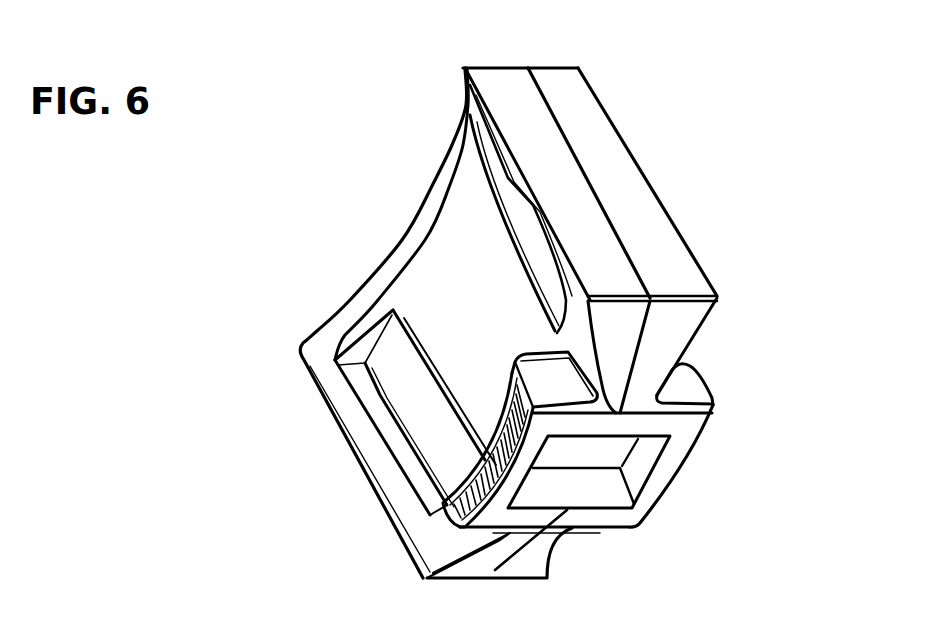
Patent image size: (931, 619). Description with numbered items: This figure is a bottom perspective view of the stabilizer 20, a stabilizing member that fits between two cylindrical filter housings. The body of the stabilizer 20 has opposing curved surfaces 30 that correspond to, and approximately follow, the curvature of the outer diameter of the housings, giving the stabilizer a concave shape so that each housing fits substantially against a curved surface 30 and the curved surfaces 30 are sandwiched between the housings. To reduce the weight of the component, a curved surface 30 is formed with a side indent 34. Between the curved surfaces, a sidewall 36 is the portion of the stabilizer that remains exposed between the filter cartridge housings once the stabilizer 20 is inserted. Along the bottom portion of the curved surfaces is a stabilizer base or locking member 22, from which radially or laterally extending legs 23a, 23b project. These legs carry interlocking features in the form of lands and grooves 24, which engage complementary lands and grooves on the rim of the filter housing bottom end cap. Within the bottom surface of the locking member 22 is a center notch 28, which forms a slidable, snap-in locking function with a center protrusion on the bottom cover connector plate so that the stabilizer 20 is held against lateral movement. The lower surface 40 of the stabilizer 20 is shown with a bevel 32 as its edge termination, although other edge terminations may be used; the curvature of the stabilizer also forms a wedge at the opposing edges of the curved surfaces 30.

The stabilizer 20 is at (718, 138).
The locking member 22 is at (670, 428).
The leg 23a is at (690, 386).
The leg 23b is at (553, 382).
The lands and grooves 24 is at (447, 507).
The center notch 28 is at (580, 487).
The curved surface 30 is at (438, 283).
The bevel 32 is at (430, 222).
The side indent 34 is at (508, 200).
The sidewall 36 is at (607, 165).
The lower surface 40 is at (665, 337).